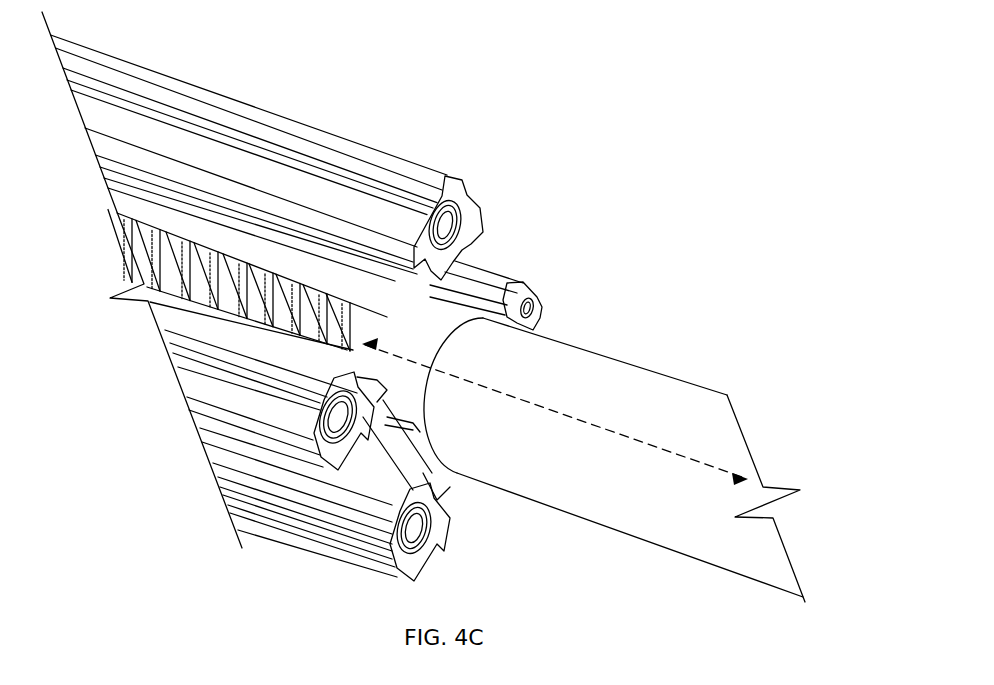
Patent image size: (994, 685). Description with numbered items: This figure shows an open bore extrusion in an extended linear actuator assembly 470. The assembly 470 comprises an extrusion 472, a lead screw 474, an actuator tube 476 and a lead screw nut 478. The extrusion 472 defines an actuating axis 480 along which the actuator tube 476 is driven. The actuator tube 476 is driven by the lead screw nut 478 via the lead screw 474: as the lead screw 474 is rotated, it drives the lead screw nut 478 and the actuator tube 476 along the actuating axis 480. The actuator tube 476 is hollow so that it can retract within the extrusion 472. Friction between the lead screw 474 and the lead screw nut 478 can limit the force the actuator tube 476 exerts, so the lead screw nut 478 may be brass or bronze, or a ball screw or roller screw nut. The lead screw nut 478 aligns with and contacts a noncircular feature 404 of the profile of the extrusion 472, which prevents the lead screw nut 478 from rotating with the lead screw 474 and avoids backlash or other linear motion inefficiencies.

The noncircular feature 404 is at (423, 477).
The assembly 470 is at (704, 68).
The extrusion 472 is at (345, 138).
The lead screw 474 is at (122, 222).
The actuator tube 476 is at (692, 398).
The lead screw nut 478 is at (468, 302).
The actuating axis 480 is at (707, 465).